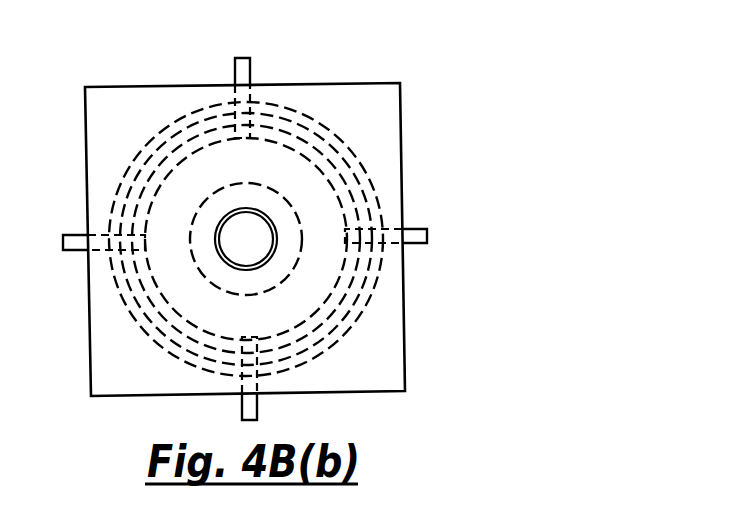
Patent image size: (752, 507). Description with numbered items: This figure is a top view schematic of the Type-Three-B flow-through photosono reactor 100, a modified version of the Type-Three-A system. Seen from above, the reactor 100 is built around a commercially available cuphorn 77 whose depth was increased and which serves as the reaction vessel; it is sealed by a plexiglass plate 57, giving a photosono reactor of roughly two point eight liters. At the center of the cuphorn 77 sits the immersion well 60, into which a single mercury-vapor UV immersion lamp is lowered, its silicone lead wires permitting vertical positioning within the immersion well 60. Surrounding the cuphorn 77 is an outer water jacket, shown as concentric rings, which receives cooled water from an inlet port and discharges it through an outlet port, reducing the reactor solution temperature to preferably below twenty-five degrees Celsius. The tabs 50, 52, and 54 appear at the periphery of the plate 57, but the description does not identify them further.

The reactor 100 is at (312, 66).
The plexiglass plate 57 is at (383, 310).
The outer ring 50 is at (118, 321).
The cuphorn 77 is at (202, 212).
The immersion well 60 is at (272, 247).
The left tab 52 is at (98, 237).
The right tab 54 is at (383, 224).